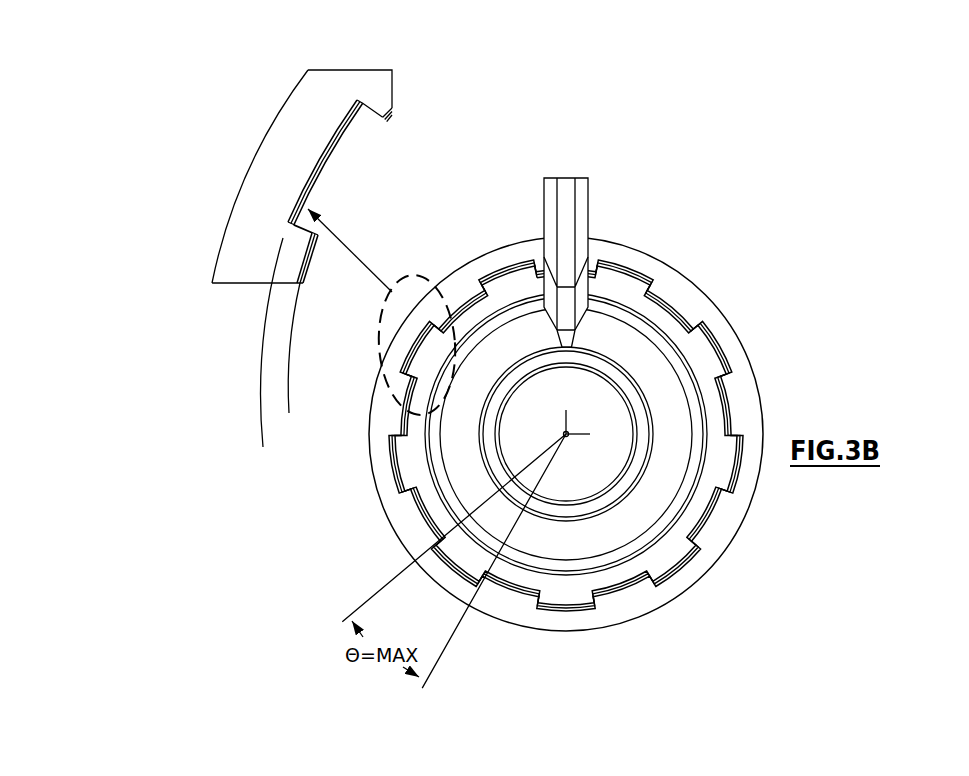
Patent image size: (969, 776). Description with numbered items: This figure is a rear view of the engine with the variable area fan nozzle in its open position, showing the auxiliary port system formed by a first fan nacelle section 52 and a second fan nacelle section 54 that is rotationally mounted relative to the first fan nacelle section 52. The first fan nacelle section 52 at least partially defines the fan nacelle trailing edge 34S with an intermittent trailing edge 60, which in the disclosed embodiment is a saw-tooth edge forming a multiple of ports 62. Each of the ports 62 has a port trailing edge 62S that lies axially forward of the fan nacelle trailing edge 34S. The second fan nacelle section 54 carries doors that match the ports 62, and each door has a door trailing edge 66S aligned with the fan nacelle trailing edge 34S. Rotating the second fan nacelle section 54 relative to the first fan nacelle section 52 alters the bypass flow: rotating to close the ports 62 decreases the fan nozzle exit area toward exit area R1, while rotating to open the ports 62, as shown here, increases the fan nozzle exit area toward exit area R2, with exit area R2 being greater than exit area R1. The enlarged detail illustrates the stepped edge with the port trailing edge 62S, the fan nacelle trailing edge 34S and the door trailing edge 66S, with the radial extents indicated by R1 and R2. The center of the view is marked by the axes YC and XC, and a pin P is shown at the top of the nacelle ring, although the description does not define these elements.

The port trailing edge 62S is at (325, 141).
The fan nacelle trailing edge 34S is at (686, 295).
The ports 62 is at (625, 285).
The door trailing edge 66S is at (310, 272).
The exit area R1 is at (292, 358).
The exit area R2 is at (264, 438).
The pin P is at (581, 211).
The second fan nacelle section 54 is at (718, 347).
The first fan nacelle section 52 is at (758, 390).
The intermittent trailing edge 60 is at (700, 523).
The Y center axis YC is at (564, 410).
The X center axis XC is at (592, 437).